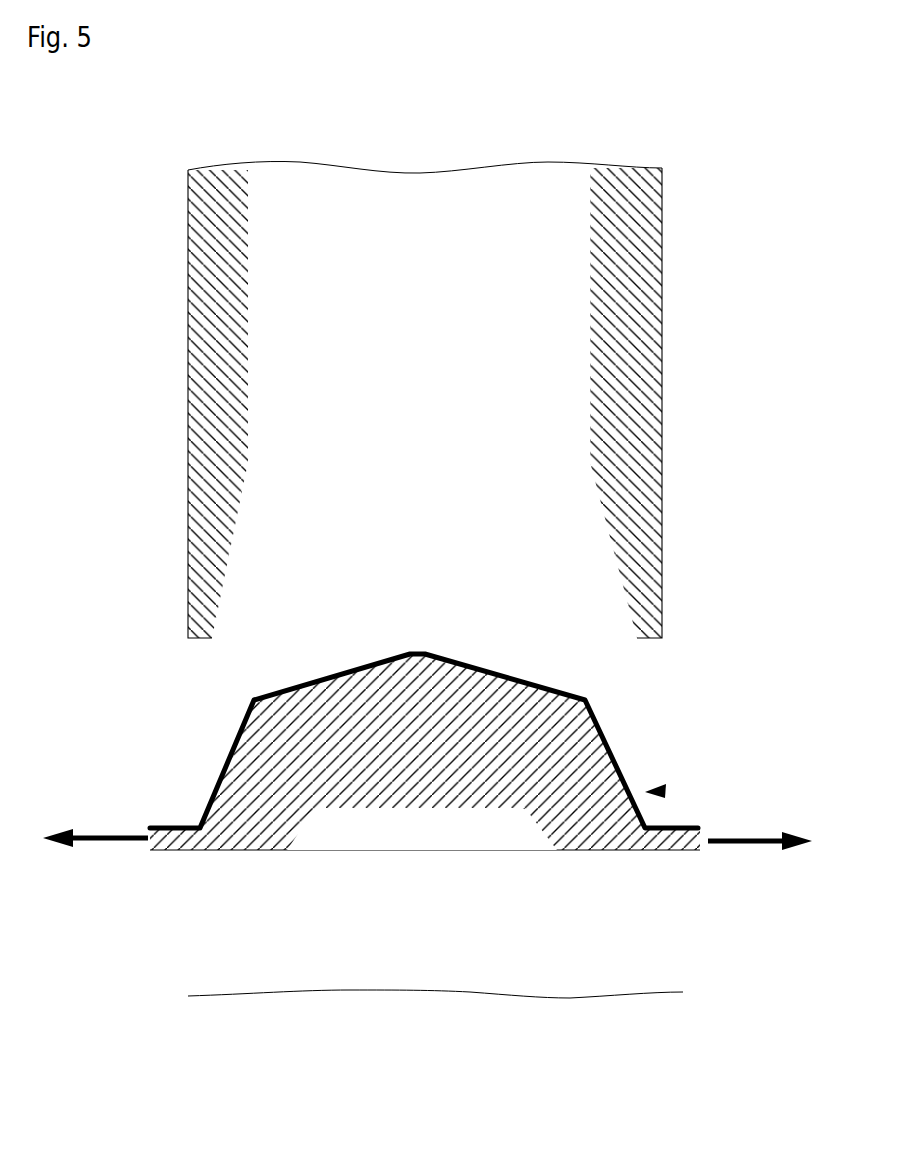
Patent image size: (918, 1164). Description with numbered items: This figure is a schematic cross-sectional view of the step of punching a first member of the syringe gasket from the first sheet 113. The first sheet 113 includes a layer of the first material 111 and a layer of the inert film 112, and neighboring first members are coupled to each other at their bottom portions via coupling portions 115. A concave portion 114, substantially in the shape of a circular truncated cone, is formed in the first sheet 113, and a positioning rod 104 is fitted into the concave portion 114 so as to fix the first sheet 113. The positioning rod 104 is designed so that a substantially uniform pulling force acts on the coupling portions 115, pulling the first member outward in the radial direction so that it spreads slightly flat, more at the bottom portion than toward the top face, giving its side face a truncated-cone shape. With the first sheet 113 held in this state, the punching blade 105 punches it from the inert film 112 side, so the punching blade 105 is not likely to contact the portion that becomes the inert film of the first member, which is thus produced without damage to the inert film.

The punching blade 105 is at (660, 287).
The first material 111 is at (315, 750).
The inert film 112 is at (608, 740).
The first sheet 113 is at (665, 789).
The concave portion 114 is at (397, 810).
The positioning rod 104 is at (218, 902).
The coupling portion 115 is at (170, 838).